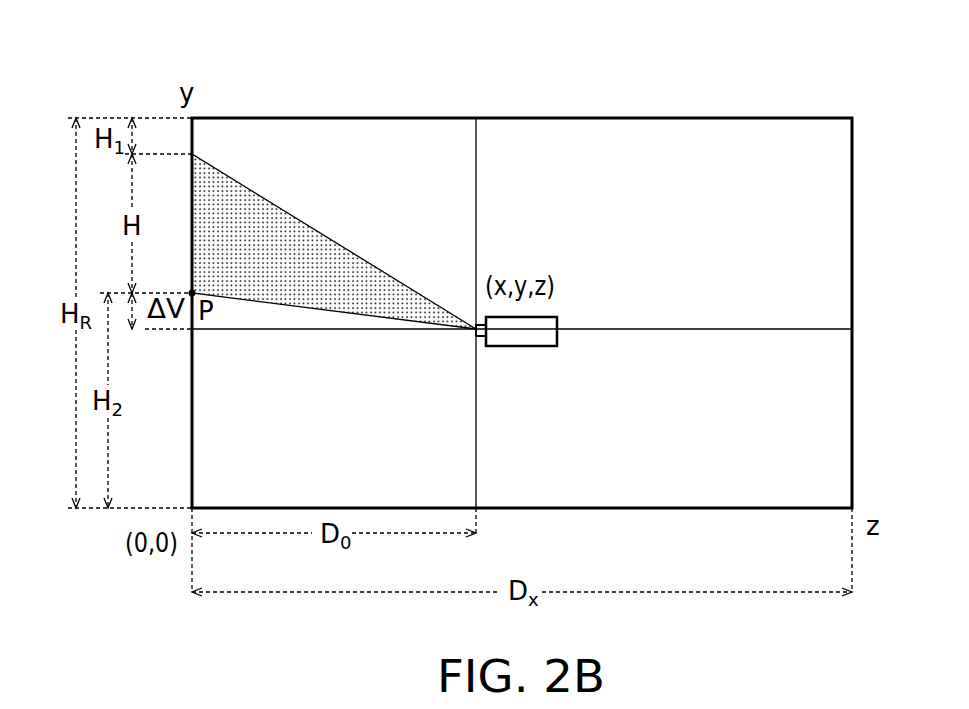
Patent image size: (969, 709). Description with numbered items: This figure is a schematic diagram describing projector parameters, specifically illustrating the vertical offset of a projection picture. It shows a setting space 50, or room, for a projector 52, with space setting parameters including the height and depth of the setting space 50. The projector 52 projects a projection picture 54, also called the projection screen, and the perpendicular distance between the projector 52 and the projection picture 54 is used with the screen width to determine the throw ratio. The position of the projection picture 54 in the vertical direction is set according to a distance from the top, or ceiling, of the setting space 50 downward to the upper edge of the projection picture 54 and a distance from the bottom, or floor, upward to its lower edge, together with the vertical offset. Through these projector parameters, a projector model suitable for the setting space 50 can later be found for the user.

The setting space 50 is at (685, 118).
The projector 52 is at (558, 322).
The projection picture 54 is at (197, 228).